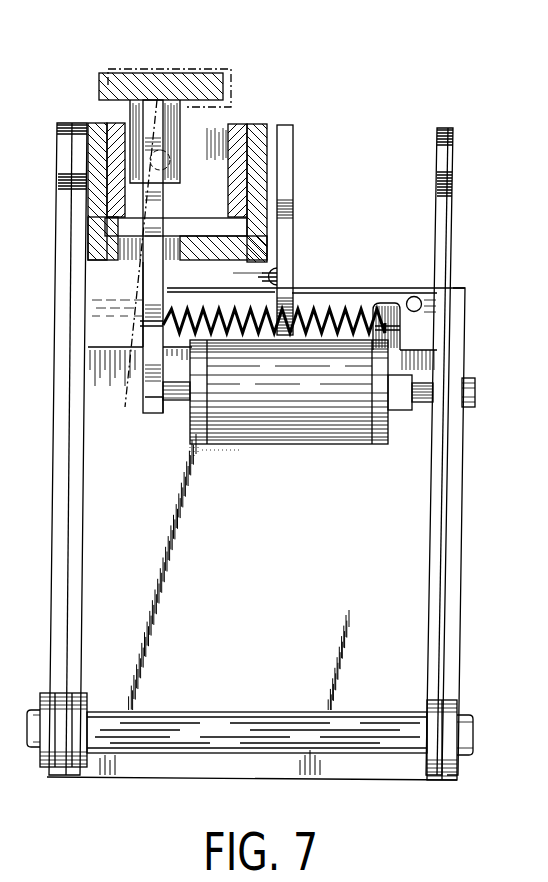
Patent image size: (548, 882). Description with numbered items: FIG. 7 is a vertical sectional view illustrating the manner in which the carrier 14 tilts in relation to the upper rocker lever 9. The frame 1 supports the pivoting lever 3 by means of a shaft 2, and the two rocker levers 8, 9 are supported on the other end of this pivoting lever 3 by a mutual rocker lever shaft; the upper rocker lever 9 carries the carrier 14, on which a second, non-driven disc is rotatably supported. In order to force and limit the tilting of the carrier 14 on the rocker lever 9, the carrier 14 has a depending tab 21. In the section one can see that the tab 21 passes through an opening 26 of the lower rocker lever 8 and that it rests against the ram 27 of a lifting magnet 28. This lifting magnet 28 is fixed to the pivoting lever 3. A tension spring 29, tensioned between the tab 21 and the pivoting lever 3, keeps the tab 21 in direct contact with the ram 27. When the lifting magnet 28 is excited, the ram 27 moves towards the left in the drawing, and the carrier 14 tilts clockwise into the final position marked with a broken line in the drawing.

The frame 1 is at (450, 585).
The shaft 2 is at (290, 722).
The pivoting lever 3 is at (438, 500).
The rocker lever 8 is at (257, 130).
The rocker lever 9 is at (237, 125).
The carrier 14 is at (160, 80).
The tab 21 is at (152, 195).
The opening 26 is at (128, 253).
The ram 27 is at (176, 393).
The lifting magnet 28 is at (290, 410).
The tension spring 29 is at (328, 313).